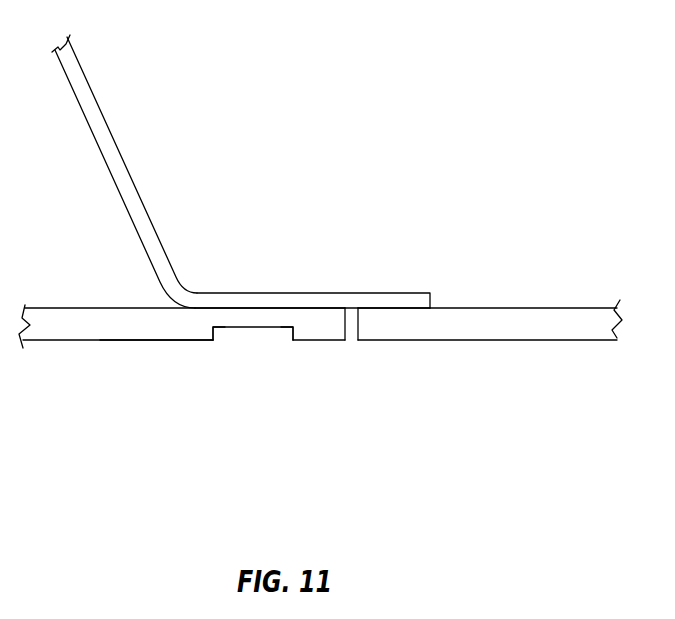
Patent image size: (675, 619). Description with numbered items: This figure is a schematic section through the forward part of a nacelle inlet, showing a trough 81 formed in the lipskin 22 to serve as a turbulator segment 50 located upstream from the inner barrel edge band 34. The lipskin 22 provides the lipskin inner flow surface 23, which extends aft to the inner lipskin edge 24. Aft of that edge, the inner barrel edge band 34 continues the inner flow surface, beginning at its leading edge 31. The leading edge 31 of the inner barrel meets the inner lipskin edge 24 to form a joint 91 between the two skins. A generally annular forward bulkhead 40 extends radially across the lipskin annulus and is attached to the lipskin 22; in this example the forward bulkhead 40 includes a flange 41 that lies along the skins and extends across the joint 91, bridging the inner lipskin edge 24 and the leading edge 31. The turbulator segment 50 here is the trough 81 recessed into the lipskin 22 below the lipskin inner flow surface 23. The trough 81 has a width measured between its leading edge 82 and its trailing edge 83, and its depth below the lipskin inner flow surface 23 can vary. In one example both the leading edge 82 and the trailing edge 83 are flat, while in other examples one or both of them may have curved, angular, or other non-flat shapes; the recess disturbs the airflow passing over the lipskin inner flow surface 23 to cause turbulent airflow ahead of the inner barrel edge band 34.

The forward bulkhead 40 is at (100, 128).
The flange 41 is at (367, 302).
The lipskin 22 is at (83, 322).
The lipskin inner flow surface 23 is at (125, 339).
The inner lipskin edge 24 is at (343, 318).
The leading edge 31 is at (359, 318).
The inner barrel edge band 34 is at (510, 320).
The trough 81 is at (258, 340).
The leading edge 82 is at (214, 330).
The trailing edge 83 is at (292, 330).
The joint 91 is at (354, 362).
The turbulator segment 50 is at (226, 432).